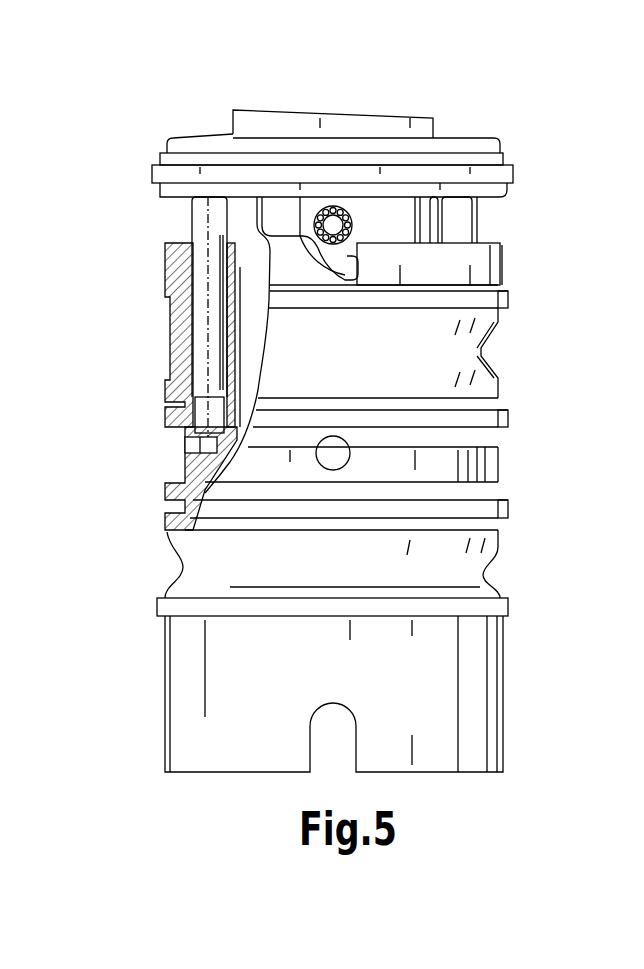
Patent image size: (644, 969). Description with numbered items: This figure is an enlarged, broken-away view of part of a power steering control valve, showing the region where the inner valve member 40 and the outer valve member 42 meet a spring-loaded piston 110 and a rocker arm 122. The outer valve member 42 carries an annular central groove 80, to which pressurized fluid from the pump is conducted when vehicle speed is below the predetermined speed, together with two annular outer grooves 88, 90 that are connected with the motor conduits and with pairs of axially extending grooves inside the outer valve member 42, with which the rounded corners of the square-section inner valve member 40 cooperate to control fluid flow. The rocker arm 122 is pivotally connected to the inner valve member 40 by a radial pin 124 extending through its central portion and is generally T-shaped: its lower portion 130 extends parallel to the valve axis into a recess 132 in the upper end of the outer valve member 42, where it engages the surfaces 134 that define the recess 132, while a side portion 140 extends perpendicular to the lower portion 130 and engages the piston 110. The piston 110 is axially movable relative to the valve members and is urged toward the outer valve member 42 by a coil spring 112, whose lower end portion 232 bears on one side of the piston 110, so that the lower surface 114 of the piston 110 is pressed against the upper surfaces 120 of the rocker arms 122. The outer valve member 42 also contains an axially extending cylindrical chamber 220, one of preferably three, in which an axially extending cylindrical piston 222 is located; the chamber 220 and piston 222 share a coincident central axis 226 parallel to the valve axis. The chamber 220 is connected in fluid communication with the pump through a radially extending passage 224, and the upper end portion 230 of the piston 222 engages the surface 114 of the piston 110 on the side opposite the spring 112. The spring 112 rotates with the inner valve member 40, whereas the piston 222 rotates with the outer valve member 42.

The inner valve member 40 is at (185, 450).
The outer valve member 42 is at (193, 667).
The annular central groove 80 is at (486, 453).
The annular outer groove 88 is at (483, 353).
The annular outer groove 90 is at (485, 575).
The piston 110 is at (177, 173).
The coil spring 112 is at (215, 112).
The lower surface 114 is at (497, 203).
The upper surfaces 120 is at (380, 195).
The rocker arm 122 is at (455, 228).
The radial pin 124 is at (333, 223).
The lower portion 130 is at (360, 244).
The recess 132 is at (333, 266).
The surfaces 134 is at (500, 285).
The side portion 140 is at (287, 210).
The axially extending cylindrical chamber 220 is at (172, 420).
The axially extending cylindrical piston 222 is at (203, 305).
The radially extending passage 224 is at (170, 492).
The central axis 226 is at (203, 270).
The upper end portion 230 is at (202, 220).
The lower end portion 232 is at (197, 145).